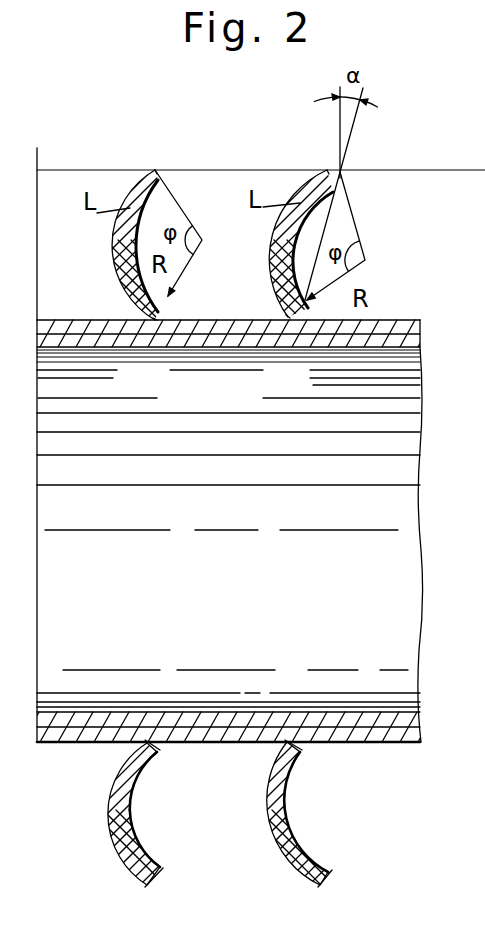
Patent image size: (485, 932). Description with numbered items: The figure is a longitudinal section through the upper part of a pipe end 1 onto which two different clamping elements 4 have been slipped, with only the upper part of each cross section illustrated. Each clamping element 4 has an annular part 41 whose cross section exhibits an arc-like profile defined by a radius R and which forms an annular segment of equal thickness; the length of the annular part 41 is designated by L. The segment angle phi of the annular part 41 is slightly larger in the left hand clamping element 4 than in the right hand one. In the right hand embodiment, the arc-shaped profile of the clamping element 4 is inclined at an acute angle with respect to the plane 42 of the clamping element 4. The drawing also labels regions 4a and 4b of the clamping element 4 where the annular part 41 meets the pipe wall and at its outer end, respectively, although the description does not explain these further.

The pipe end 1 is at (251, 585).
The clamping element 4 is at (170, 332).
The opening in wall 4a is at (157, 316).
The outer end of fin 4b is at (155, 170).
The annular part 41 is at (114, 252).
The plane of the clamping element 42 is at (340, 123).